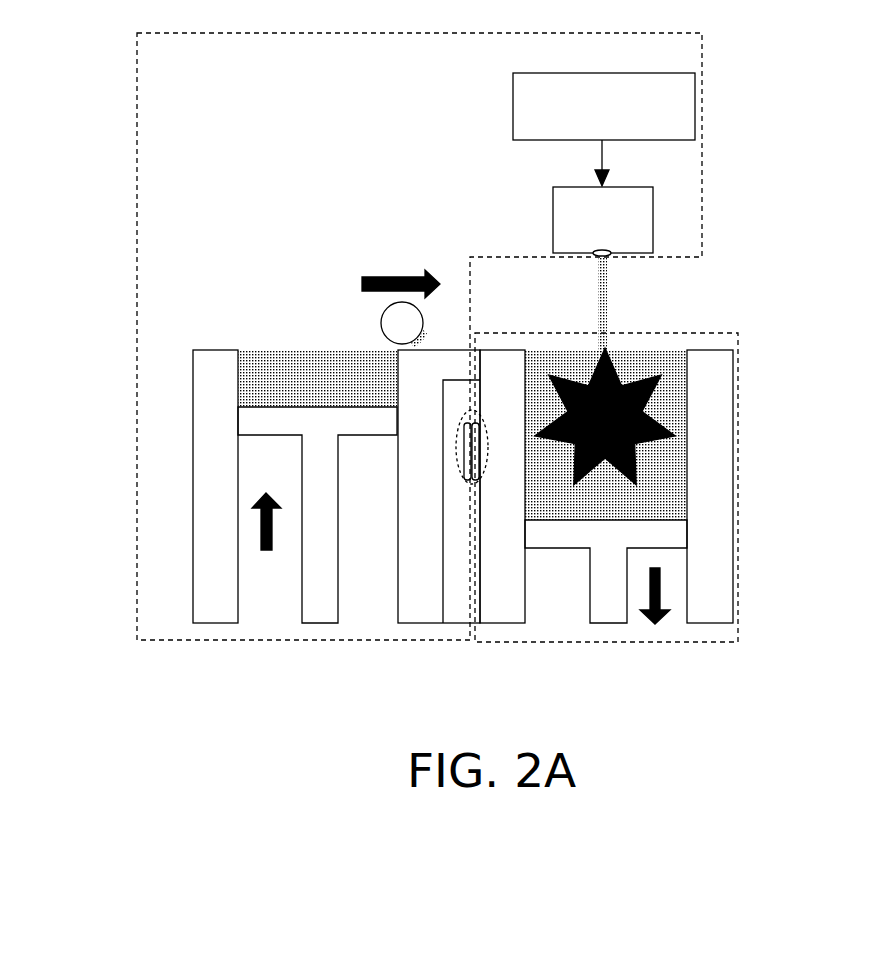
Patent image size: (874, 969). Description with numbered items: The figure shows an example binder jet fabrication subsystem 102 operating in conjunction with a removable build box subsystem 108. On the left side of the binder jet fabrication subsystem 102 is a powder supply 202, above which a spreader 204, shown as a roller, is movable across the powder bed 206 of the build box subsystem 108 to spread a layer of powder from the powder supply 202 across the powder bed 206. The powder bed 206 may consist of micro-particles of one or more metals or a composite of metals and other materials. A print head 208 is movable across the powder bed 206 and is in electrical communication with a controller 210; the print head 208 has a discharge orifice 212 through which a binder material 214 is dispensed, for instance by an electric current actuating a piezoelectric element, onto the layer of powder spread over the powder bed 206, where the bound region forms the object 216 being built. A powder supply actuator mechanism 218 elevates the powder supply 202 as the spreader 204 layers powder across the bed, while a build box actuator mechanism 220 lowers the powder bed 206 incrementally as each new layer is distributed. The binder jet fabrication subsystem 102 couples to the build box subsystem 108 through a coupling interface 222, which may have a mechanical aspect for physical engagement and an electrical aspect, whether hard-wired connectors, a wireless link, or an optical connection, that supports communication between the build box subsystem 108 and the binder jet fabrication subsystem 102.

The binder jet fabrication subsystem 102 is at (138, 580).
The build box subsystem 108 is at (739, 605).
The powder supply 202 is at (290, 352).
The spreader 204 is at (383, 318).
The powder bed 206 is at (677, 357).
The print head 208 is at (553, 215).
The controller 210 is at (513, 110).
The discharge orifice 212 is at (593, 257).
The binder material 214 is at (600, 287).
The three-dimensional object 216 is at (635, 370).
The powder supply actuator mechanism 218 is at (313, 608).
The build box actuator mechanism 220 is at (605, 612).
The coupling interface 222 is at (462, 485).